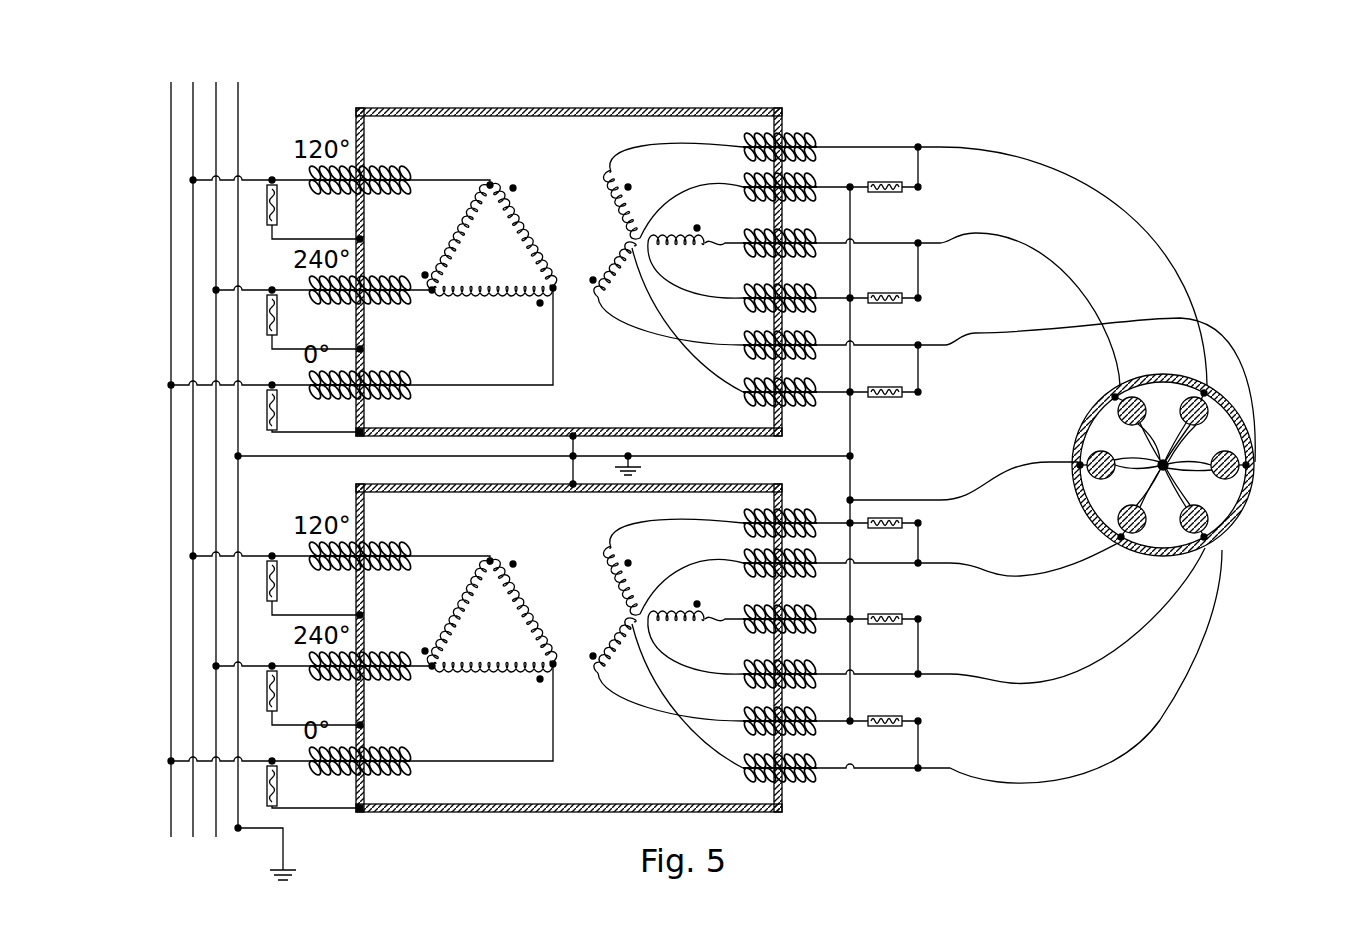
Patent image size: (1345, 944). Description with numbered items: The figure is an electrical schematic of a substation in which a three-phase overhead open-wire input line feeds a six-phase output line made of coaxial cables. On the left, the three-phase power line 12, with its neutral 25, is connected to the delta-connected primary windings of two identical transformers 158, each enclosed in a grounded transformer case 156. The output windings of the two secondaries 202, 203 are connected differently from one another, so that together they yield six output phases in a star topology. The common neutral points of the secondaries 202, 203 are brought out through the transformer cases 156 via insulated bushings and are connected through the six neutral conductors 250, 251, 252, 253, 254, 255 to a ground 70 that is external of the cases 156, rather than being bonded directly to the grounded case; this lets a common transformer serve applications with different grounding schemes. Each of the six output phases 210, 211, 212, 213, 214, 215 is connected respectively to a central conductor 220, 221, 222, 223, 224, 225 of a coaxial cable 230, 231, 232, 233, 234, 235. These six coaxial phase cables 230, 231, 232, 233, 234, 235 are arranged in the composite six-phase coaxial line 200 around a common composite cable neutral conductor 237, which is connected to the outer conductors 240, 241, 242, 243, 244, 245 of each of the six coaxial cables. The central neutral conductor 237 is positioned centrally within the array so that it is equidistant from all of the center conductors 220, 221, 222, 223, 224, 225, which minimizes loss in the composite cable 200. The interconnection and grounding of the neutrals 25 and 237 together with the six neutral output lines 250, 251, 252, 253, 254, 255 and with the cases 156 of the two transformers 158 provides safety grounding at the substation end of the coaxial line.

The three-phase power line 12 is at (242, 98).
The neutral 25 is at (240, 134).
The transformer case 156 is at (680, 108).
The transformer 158 is at (541, 140).
The secondary 202 is at (641, 176).
The secondary 203 is at (641, 552).
The output phase 210 is at (860, 243).
The output phase 211 is at (992, 568).
The output phase 212 is at (857, 147).
The output phase 213 is at (958, 678).
The output phase 214 is at (962, 333).
The output phase 215 is at (998, 782).
The neutral conductor 250 is at (850, 298).
The neutral conductor 251 is at (850, 617).
The neutral conductor 252 is at (836, 187).
The neutral conductor 253 is at (850, 521).
The neutral conductor 254 is at (850, 395).
The neutral conductor 255 is at (830, 723).
The ground 70 is at (638, 470).
The six-phase coaxial line 200 is at (1073, 430).
The central conductor 220 is at (1116, 395).
The central conductor 221 is at (1095, 472).
The central conductor 222 is at (1196, 400).
The central conductor 223 is at (1137, 535).
The central conductor 224 is at (1240, 470).
The central conductor 225 is at (1208, 524).
The coaxial cable 230 is at (1108, 395).
The coaxial cable 231 is at (1078, 466).
The coaxial cable 232 is at (1207, 390).
The coaxial cable 233 is at (1145, 555).
The coaxial cable 234 is at (1250, 462).
The coaxial cable 235 is at (1212, 538).
The composite cable neutral conductor 237 is at (1185, 390).
The outer conductor 240 is at (1136, 405).
The outer conductor 241 is at (1090, 500).
The outer conductor 242 is at (1205, 422).
The outer conductor 243 is at (1132, 548).
The outer conductor 244 is at (1238, 500).
The outer conductor 245 is at (1215, 548).